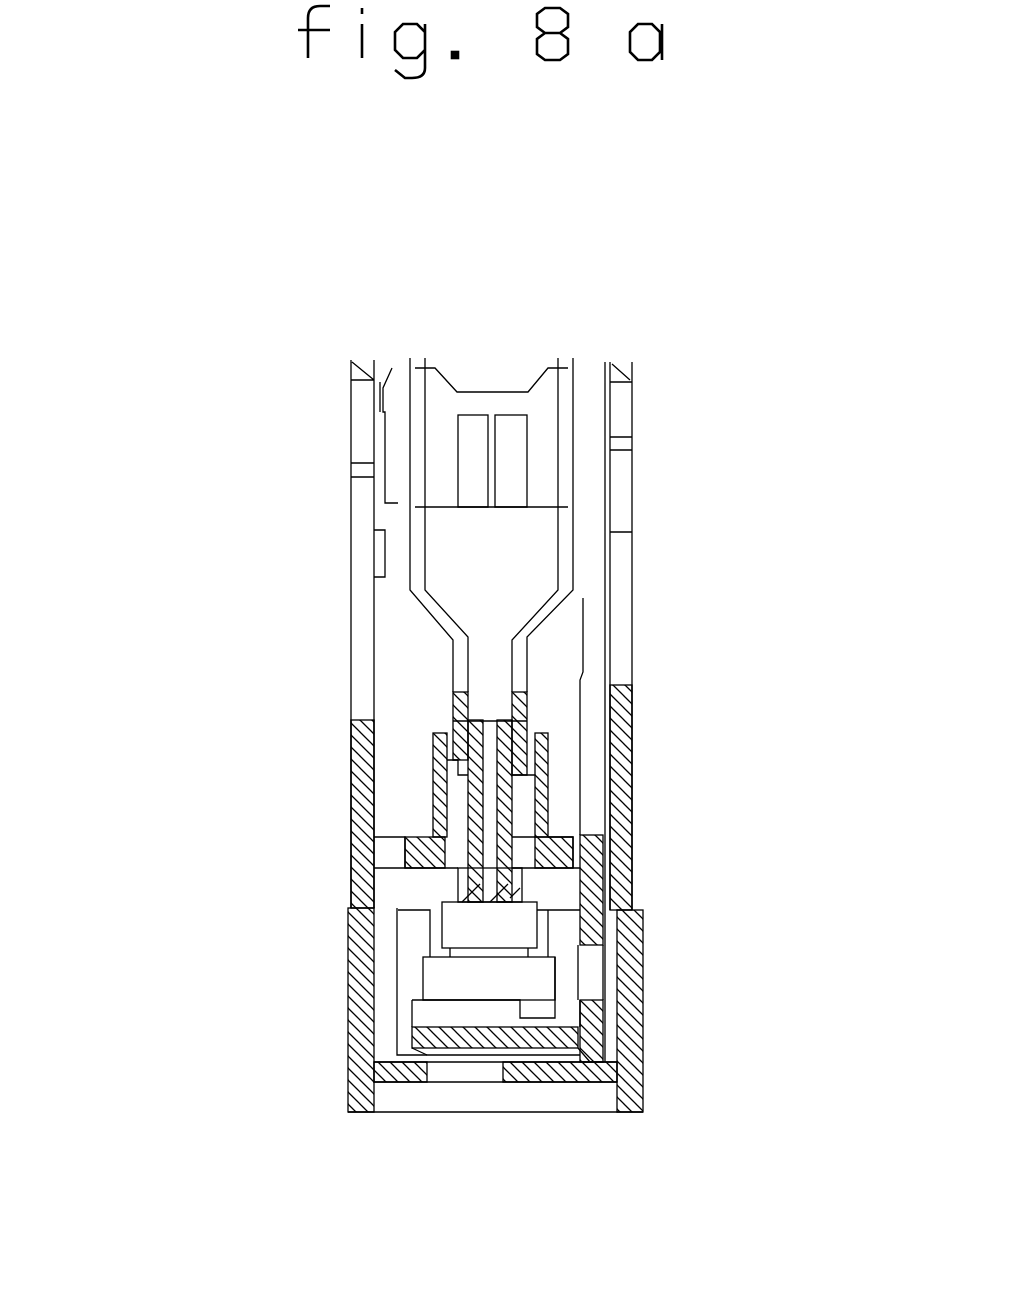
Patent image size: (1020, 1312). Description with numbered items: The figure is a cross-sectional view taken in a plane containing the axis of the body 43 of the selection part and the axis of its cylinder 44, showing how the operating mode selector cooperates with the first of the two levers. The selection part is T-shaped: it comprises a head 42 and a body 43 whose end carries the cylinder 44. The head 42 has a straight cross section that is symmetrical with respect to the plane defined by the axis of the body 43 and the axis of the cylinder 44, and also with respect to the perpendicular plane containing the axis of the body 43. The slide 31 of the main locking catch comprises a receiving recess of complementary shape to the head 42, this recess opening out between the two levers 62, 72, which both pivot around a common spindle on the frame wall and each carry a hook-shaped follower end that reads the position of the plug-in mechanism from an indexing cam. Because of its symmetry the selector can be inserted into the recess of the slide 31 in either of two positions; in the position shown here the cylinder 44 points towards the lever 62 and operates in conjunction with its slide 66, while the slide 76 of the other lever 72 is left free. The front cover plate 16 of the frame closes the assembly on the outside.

The front cover plate 16 is at (350, 1053).
The lever 62 is at (408, 535).
The lever 72 is at (573, 600).
The cylinder 44 is at (473, 727).
The slide 76 is at (512, 775).
The slide 66 is at (468, 773).
The slide 31 is at (407, 878).
The body 43 is at (512, 840).
The head 42 is at (485, 880).